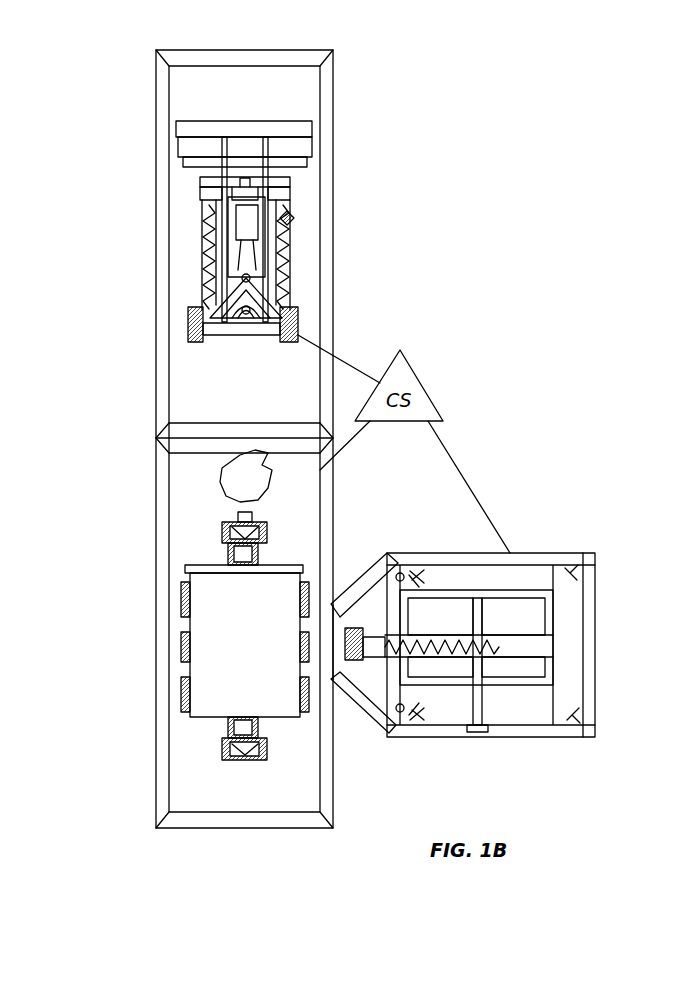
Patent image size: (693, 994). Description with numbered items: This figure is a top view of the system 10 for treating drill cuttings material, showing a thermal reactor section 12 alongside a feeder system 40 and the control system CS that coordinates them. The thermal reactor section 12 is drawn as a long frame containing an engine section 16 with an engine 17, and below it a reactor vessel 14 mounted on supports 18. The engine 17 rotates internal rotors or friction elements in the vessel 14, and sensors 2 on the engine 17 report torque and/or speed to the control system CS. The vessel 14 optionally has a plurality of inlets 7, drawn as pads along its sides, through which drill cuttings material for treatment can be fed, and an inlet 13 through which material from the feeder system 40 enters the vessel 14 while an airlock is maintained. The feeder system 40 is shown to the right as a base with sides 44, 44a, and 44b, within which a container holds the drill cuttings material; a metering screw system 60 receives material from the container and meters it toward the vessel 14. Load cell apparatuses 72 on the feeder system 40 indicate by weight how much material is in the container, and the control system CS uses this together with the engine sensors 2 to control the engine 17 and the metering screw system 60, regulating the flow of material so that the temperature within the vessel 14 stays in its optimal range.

The system 10 is at (410, 48).
The sensors 2 is at (294, 218).
The engine section 16 is at (328, 267).
The engine 17 is at (262, 277).
The thermal reactor section 12 is at (300, 497).
The supports 18 is at (222, 533).
The reactor vessel 14 is at (186, 578).
The inlets 7 is at (310, 583).
The inlet 13 is at (362, 580).
The feeder system 40 is at (540, 553).
The metering screw system 60 is at (500, 648).
The side 44 is at (577, 553).
The side 44a is at (373, 572).
The side 44b is at (337, 693).
The load cell apparatuses 72 is at (397, 580).